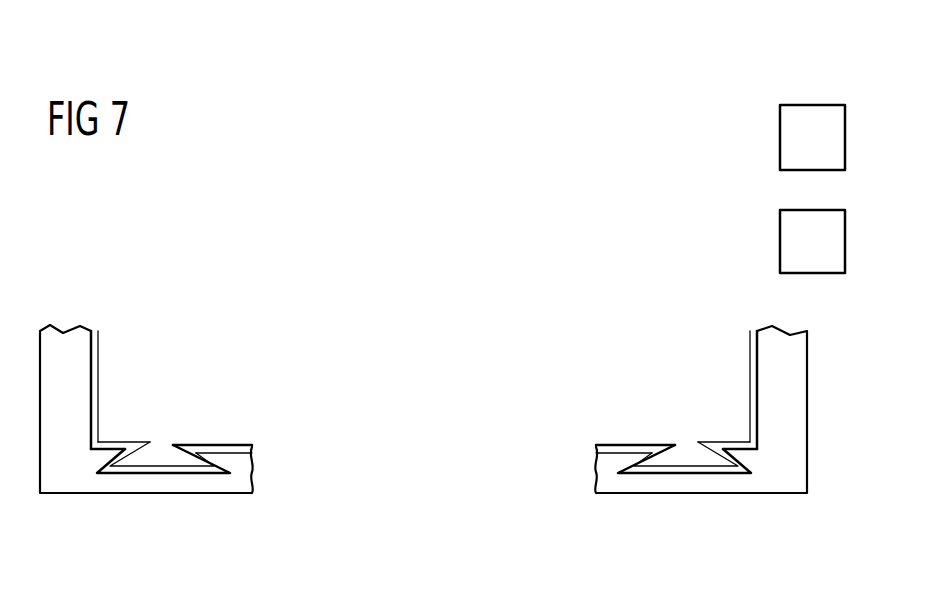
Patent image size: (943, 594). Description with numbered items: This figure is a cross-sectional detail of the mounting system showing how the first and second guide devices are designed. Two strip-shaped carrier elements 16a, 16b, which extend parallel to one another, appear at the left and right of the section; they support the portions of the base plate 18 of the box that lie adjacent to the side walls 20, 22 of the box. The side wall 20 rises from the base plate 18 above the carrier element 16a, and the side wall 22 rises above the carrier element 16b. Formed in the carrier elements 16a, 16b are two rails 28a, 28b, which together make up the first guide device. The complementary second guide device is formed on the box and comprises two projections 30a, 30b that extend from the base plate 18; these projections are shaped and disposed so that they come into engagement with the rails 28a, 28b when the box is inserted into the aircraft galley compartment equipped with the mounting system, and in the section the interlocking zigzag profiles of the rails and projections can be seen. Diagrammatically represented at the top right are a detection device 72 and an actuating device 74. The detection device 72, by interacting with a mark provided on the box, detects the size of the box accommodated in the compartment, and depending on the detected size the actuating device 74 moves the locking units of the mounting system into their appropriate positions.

The carrier element 16a is at (72, 484).
The carrier element 16b is at (765, 484).
The base plate 18 is at (254, 447).
The side wall 20 is at (100, 362).
The side wall 22 is at (748, 352).
The rail 28a is at (164, 472).
The rail 28b is at (680, 473).
The projection 30a is at (164, 453).
The projection 30b is at (687, 456).
The detection device 72 is at (778, 140).
The actuating device 74 is at (778, 244).